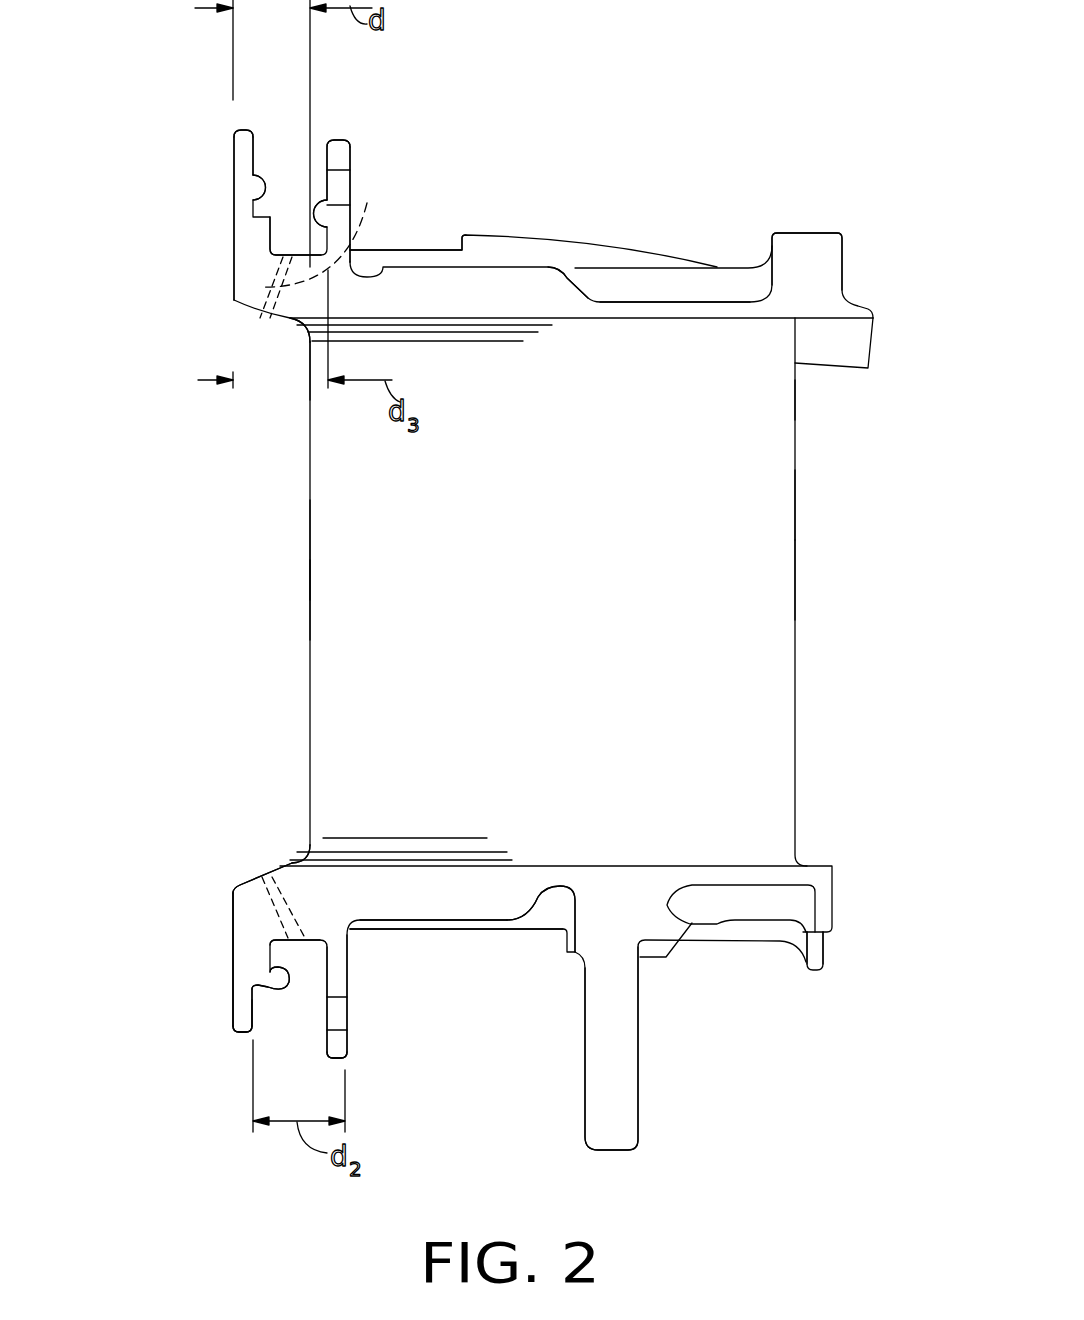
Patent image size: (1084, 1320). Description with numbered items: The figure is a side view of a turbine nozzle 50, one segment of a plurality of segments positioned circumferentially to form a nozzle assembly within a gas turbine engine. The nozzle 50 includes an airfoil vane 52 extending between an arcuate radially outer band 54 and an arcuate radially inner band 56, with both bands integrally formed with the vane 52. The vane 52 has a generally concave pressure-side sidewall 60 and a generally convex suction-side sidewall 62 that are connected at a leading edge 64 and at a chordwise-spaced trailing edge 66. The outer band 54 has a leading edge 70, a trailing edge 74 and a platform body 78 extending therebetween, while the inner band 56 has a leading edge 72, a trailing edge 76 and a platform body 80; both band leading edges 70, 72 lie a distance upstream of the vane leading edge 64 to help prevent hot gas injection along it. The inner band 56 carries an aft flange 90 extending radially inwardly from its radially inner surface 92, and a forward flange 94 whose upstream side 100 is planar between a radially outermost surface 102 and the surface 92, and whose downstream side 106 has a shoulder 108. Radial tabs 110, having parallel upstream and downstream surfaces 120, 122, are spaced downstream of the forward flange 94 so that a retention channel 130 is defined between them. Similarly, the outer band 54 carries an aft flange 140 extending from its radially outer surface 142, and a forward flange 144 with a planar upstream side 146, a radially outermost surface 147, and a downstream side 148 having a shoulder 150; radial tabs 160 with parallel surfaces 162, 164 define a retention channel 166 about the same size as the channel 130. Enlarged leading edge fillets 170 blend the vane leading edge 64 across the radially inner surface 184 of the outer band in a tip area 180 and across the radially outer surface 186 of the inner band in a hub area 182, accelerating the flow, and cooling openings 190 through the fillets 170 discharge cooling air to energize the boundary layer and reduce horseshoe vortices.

The turbine nozzle 50 is at (185, 55).
The airfoil vane 52 is at (522, 563).
The outer band 54 is at (672, 283).
The inner band 56 is at (455, 893).
The pressure-side sidewall 60 is at (798, 402).
The suction-side sidewall 62 is at (770, 560).
The leading edge 64 is at (308, 598).
The trailing edge 66 is at (798, 508).
The leading edge 70 is at (234, 218).
The leading edge 72 is at (232, 948).
The trailing edge 74 is at (873, 342).
The trailing edge 76 is at (833, 898).
The platform body 78 is at (537, 290).
The platform body 80 is at (433, 897).
The aft flange 90 is at (623, 1075).
The radially inner surface 92 is at (484, 930).
The forward flange 94 is at (232, 1012).
The upstream side 100 is at (232, 900).
The radially outermost surface 102 is at (242, 1035).
The downstream side 106 is at (255, 1005).
The shoulder 108 is at (272, 990).
The radial tabs 110 is at (338, 962).
The upstream surface 120 is at (330, 1040).
The downstream surface 122 is at (348, 1047).
The retention channel 130 is at (290, 928).
The aft flange 140 is at (805, 248).
The radially outer surface 142 is at (432, 250).
The forward flange 144 is at (250, 182).
The upstream side 146 is at (234, 143).
The radially outermost surface 147 is at (253, 130).
The downstream side 148 is at (256, 200).
The shoulder 150 is at (283, 230).
The radial tabs 160 is at (350, 150).
The upstream surface 162 is at (330, 215).
The downstream surface 164 is at (352, 172).
The retention channel 166 is at (325, 160).
The leading edge fillets 170 is at (295, 335).
The tip area 180 is at (338, 347).
The hub area 182 is at (346, 855).
The radially inner surface 184 is at (245, 305).
The radially outer surface 186 is at (272, 875).
The cooling openings 190 is at (372, 196).